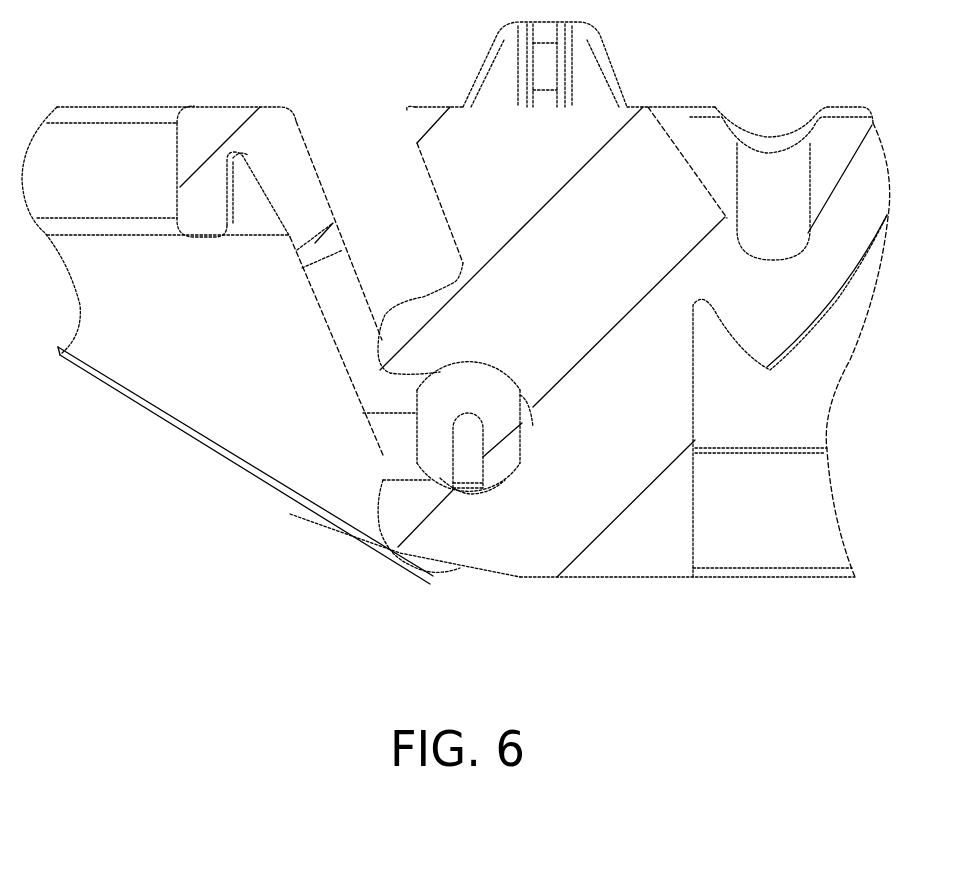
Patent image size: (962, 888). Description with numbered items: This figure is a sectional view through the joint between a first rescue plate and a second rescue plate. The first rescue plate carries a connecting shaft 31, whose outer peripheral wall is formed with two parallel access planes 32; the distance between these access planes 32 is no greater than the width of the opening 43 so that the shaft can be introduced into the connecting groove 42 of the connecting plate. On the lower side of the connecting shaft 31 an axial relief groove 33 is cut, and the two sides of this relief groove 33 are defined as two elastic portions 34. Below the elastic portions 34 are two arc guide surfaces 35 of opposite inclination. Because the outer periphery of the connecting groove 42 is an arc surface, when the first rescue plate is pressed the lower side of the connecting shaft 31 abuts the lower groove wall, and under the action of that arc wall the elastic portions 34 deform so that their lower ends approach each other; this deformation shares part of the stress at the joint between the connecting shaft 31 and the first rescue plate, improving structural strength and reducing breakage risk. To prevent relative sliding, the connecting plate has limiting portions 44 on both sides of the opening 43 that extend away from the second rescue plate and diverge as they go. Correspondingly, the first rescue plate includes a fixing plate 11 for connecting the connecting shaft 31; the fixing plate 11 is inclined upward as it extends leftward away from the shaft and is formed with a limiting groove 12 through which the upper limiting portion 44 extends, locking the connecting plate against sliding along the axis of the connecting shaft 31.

The fixing plate 11 is at (330, 333).
The limiting groove 12 is at (337, 290).
The connecting shaft 31 is at (430, 427).
The access planes 32 is at (417, 447).
The relief groove 33 is at (470, 462).
The elastic portions 34 is at (443, 472).
The arc guide surfaces 35 is at (430, 468).
The connecting groove 42 is at (533, 430).
The opening 43 is at (393, 470).
The limiting portions 44 is at (427, 333).